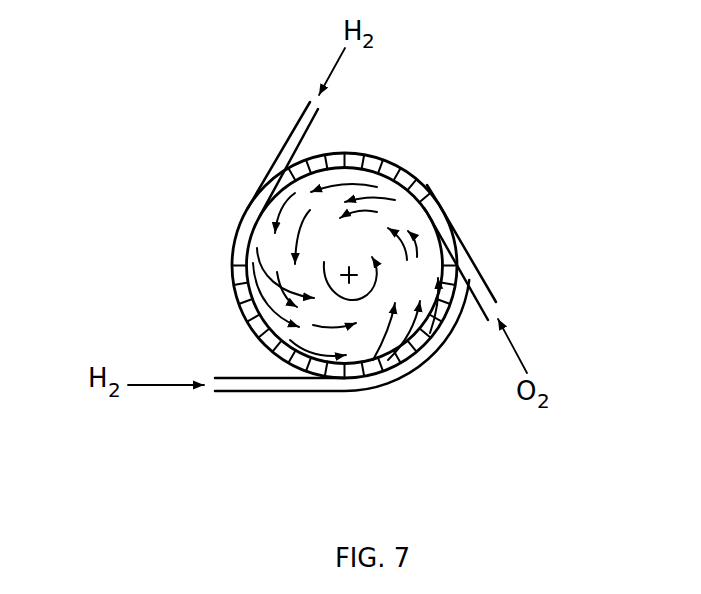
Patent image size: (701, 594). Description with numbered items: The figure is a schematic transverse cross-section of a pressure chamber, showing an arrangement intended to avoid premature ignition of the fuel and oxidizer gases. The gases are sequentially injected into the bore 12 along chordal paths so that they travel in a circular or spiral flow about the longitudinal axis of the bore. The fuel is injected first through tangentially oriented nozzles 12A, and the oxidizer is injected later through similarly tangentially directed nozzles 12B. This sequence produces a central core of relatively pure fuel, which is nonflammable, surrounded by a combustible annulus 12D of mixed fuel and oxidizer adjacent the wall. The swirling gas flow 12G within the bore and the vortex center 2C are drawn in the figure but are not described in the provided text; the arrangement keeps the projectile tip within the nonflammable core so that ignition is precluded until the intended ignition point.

The bore 12 is at (363, 172).
The tangentially oriented nozzles 12A is at (280, 153).
The tangentially directed nozzles 12B is at (492, 293).
The combustible annulus 12D is at (255, 294).
The gas flow in chamber 12G is at (350, 268).
The vortex center 2C is at (378, 272).